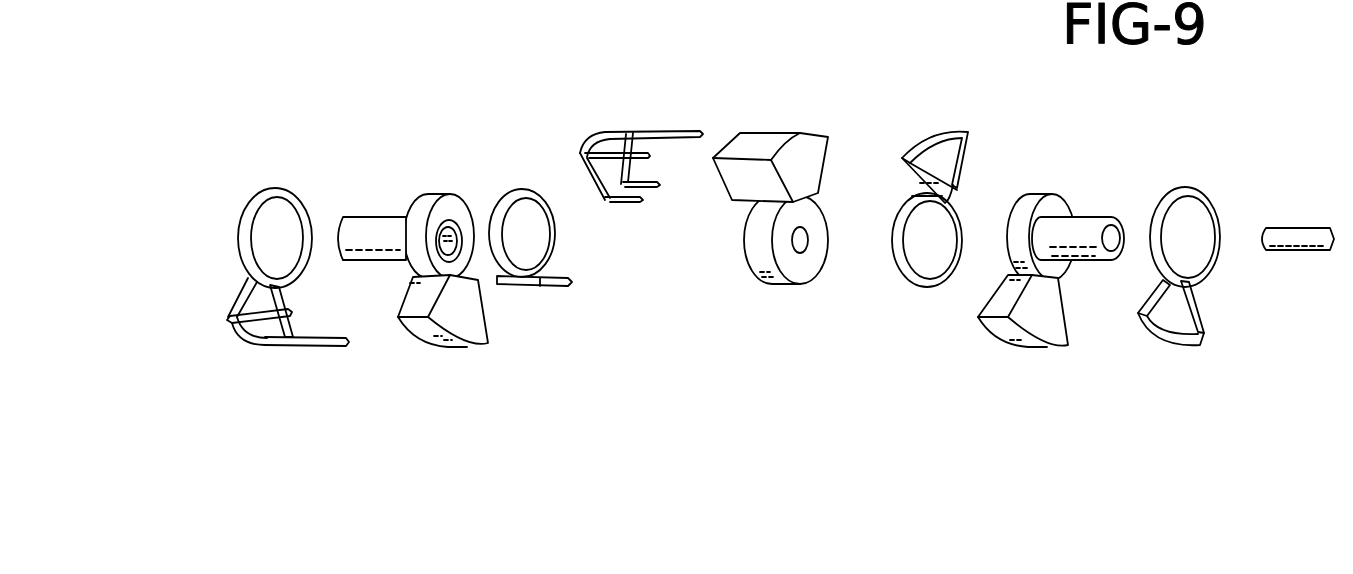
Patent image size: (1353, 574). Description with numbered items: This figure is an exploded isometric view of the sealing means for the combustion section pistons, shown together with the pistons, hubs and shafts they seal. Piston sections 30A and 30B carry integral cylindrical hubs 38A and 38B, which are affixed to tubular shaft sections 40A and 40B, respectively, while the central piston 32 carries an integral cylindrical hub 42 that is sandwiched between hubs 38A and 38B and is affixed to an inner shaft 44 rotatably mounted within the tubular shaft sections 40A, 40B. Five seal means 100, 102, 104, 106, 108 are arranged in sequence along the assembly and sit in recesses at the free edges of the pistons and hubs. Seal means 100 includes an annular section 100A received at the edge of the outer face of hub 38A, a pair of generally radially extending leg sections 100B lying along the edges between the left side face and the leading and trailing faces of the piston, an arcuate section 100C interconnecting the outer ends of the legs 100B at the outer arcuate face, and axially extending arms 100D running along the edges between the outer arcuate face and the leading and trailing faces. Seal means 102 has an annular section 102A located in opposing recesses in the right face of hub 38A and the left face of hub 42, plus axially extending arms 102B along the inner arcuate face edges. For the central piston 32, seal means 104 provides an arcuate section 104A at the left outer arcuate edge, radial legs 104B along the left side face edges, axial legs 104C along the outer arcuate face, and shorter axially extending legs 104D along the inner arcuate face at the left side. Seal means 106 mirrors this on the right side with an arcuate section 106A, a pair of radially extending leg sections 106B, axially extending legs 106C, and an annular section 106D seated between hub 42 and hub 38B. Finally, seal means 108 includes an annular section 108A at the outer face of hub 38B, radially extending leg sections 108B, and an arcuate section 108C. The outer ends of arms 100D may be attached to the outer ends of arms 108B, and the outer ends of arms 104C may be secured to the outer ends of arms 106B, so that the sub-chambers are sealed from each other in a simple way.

The seal means 100 is at (271, 183).
The annular section 100A is at (243, 213).
The leg sections 100B is at (258, 301).
The arcuate section 100C is at (247, 345).
The axially extending arms 100D is at (298, 346).
The tubular shaft section 40A is at (355, 216).
The cylindrical hub 38A is at (430, 192).
The piston section 30A is at (460, 350).
The seal means 102 is at (516, 181).
The annular section 102A is at (497, 206).
The axially extending arms 102B is at (525, 290).
The seal means 104 is at (612, 119).
The arcuate section 104A is at (595, 140).
The radial legs 104B is at (640, 170).
The axial legs 104C is at (632, 140).
The shorter axially extending legs 104D is at (648, 190).
The piston 32 is at (773, 132).
The cylindrical hub 42 is at (757, 285).
The seal means 106 is at (936, 124).
The arcuate section 106A is at (918, 142).
The leg sections 106B is at (958, 170).
The axially extending legs 106C is at (926, 213).
The annular section 106D is at (912, 287).
The cylindrical hub 38B is at (1043, 193).
The tubular shaft section 40B is at (1104, 215).
The piston section 30B is at (1008, 345).
The seal means 108 is at (1199, 181).
The annular section 108A is at (1213, 215).
The leg sections 108B is at (1202, 328).
The arcuate section 108C is at (1170, 345).
The inner shaft 44 is at (1303, 252).